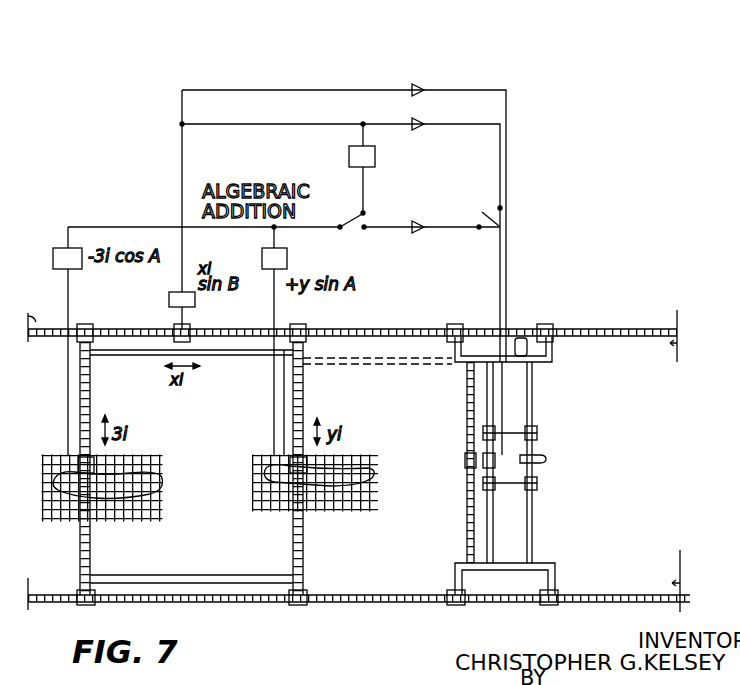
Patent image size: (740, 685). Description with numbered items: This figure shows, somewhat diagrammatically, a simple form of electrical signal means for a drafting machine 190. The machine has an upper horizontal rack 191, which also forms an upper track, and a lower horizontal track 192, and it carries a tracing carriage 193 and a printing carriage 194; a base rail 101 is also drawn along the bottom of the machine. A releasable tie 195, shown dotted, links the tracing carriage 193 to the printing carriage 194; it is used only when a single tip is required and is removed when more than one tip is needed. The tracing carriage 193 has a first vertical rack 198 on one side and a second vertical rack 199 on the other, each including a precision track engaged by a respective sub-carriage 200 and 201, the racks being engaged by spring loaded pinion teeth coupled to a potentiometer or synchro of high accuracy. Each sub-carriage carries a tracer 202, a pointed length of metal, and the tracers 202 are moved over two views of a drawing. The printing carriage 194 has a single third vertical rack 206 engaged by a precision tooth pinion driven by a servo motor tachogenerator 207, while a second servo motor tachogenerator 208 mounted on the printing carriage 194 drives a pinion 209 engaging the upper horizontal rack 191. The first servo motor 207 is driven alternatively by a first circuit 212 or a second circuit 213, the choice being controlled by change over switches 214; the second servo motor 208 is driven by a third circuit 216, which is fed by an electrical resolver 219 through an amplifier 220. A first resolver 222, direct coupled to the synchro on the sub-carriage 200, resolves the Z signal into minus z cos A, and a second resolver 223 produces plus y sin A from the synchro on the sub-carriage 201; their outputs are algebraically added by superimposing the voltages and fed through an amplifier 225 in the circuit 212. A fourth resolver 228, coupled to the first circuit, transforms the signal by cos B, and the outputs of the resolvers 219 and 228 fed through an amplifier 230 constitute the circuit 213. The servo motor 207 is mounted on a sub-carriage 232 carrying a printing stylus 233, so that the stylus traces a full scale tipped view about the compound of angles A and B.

The base rail 101 is at (367, 597).
The drafting machine 190 is at (580, 263).
The upper horizontal rack 191 is at (634, 328).
The lower horizontal track 192 is at (615, 603).
The tracing carriage 193 is at (229, 586).
The printing carriage 194 is at (511, 578).
The releasable tie 195 is at (410, 364).
The vertical rack 198 is at (90, 552).
The vertical rack 199 is at (303, 552).
The sub-carriage 200 is at (76, 465).
The sub-carriage 201 is at (290, 470).
The tracer 202 is at (93, 468).
The vertical rack 206 is at (468, 532).
The servo motor tachogenerator 207 is at (496, 472).
The servo motor tachogenerator 208 is at (527, 350).
The pinion 209 is at (520, 326).
The circuit No. 1 212 is at (459, 234).
The circuit No. 2 213 is at (500, 187).
The change over switches 214 is at (503, 212).
The circuit No. 3 216 is at (512, 106).
The electrical resolver 219 is at (169, 304).
The amplifier 220 is at (418, 84).
The resolver 222 is at (62, 255).
The resolver 223 is at (300, 252).
The amplifier 225 is at (421, 232).
The resolver 228 is at (349, 156).
The amplifier 230 is at (425, 128).
The sub-carriage 232 is at (510, 433).
The printing stylus 233 is at (548, 459).